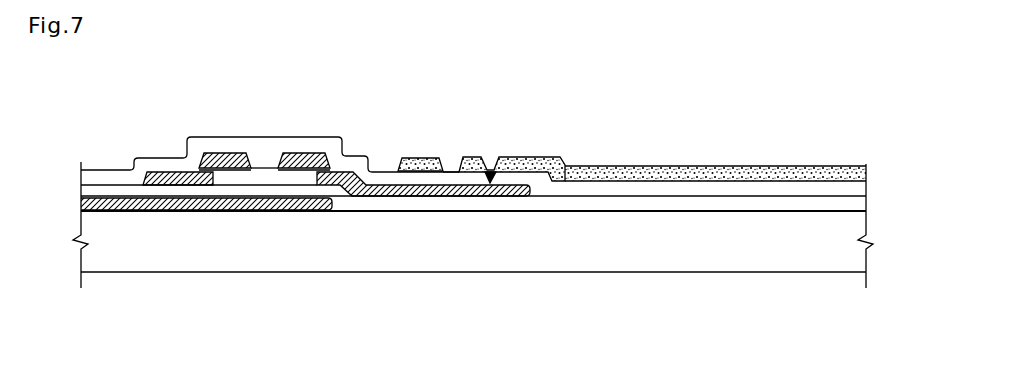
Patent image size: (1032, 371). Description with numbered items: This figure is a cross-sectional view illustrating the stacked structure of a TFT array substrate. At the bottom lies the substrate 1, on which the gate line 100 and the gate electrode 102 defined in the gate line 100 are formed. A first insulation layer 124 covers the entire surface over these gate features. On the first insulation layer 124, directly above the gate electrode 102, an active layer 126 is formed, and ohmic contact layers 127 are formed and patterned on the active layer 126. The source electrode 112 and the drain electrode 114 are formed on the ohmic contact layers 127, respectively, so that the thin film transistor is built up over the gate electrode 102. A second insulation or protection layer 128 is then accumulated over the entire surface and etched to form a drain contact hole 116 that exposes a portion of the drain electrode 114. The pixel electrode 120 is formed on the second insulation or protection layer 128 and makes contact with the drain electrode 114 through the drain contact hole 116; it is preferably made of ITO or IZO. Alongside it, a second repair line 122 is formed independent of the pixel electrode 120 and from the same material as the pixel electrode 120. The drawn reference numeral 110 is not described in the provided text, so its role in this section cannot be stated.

The substrate 1 is at (508, 252).
The gate line 100 is at (188, 212).
The gate electrode 102 is at (318, 212).
The data line 110 is at (159, 172).
The source electrode 112 is at (231, 153).
The drain electrode 114 is at (447, 196).
The drain contact hole 116 is at (490, 172).
The pixel electrode 120 is at (640, 166).
The second repair line 122 is at (418, 158).
The first insulation layer 124 is at (575, 200).
The active layer 126 is at (266, 180).
The ohmic contact layers 127 is at (290, 170).
The second insulation or protection layer 128 is at (321, 153).